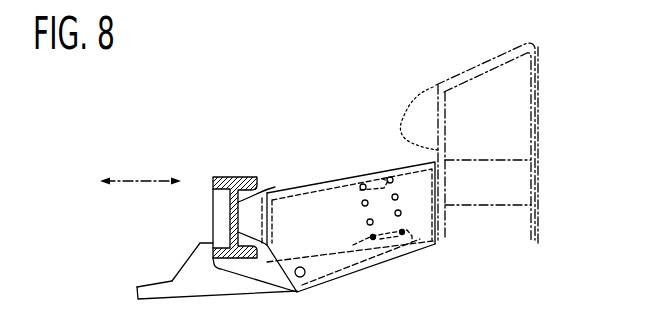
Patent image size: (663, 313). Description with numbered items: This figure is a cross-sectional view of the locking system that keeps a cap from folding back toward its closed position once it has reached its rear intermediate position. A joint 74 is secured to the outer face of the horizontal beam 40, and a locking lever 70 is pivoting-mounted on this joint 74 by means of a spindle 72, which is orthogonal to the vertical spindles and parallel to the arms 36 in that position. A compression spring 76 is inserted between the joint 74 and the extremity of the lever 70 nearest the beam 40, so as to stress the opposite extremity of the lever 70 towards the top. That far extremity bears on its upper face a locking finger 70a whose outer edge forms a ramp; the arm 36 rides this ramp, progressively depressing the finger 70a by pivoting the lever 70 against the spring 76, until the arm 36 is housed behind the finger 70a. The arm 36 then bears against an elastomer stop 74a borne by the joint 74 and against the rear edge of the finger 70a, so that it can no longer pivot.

The arm 36 is at (217, 176).
The horizontal beam 40 is at (533, 178).
The locking lever 70 is at (179, 284).
The locking finger 70a is at (198, 249).
The spindle 72 is at (305, 270).
The joint 74 is at (316, 190).
The elastomer stop 74a is at (257, 191).
The compression spring 76 is at (396, 194).